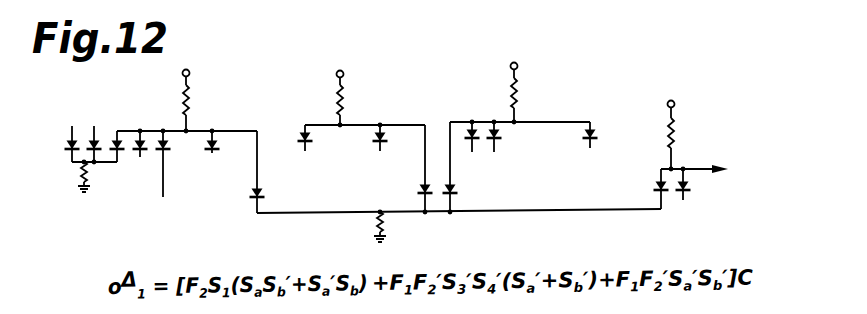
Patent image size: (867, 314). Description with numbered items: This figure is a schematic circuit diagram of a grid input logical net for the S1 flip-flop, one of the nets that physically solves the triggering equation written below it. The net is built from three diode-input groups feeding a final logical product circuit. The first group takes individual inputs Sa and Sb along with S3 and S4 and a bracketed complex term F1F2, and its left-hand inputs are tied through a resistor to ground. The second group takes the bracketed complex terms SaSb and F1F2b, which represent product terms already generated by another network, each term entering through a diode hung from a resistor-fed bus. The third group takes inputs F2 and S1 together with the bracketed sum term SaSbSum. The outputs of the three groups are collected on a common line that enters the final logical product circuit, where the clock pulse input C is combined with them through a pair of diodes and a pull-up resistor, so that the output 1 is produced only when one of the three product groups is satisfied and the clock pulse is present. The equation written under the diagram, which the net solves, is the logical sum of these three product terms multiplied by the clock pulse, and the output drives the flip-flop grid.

The diode gate input S_a' Sa is at (73, 135).
The diode gate input S_b' Sb is at (99, 135).
The diode gate input S_3' S3 is at (142, 159).
The diode gate input S_4' S4 is at (169, 174).
The diode gate input (F1F2') F1F2 is at (219, 156).
The diode gate input (Sa'Sb') SaSb is at (304, 155).
The diode gate input (F1F2') F1F2b is at (381, 153).
The diode gate input F2 is at (473, 149).
The diode gate input S1 is at (498, 149).
The diode gate input (SaSb'+Sa'Sb) SaSbSum is at (581, 150).
The clock input diode C is at (683, 194).
The output oΔ 1 is at (749, 173).